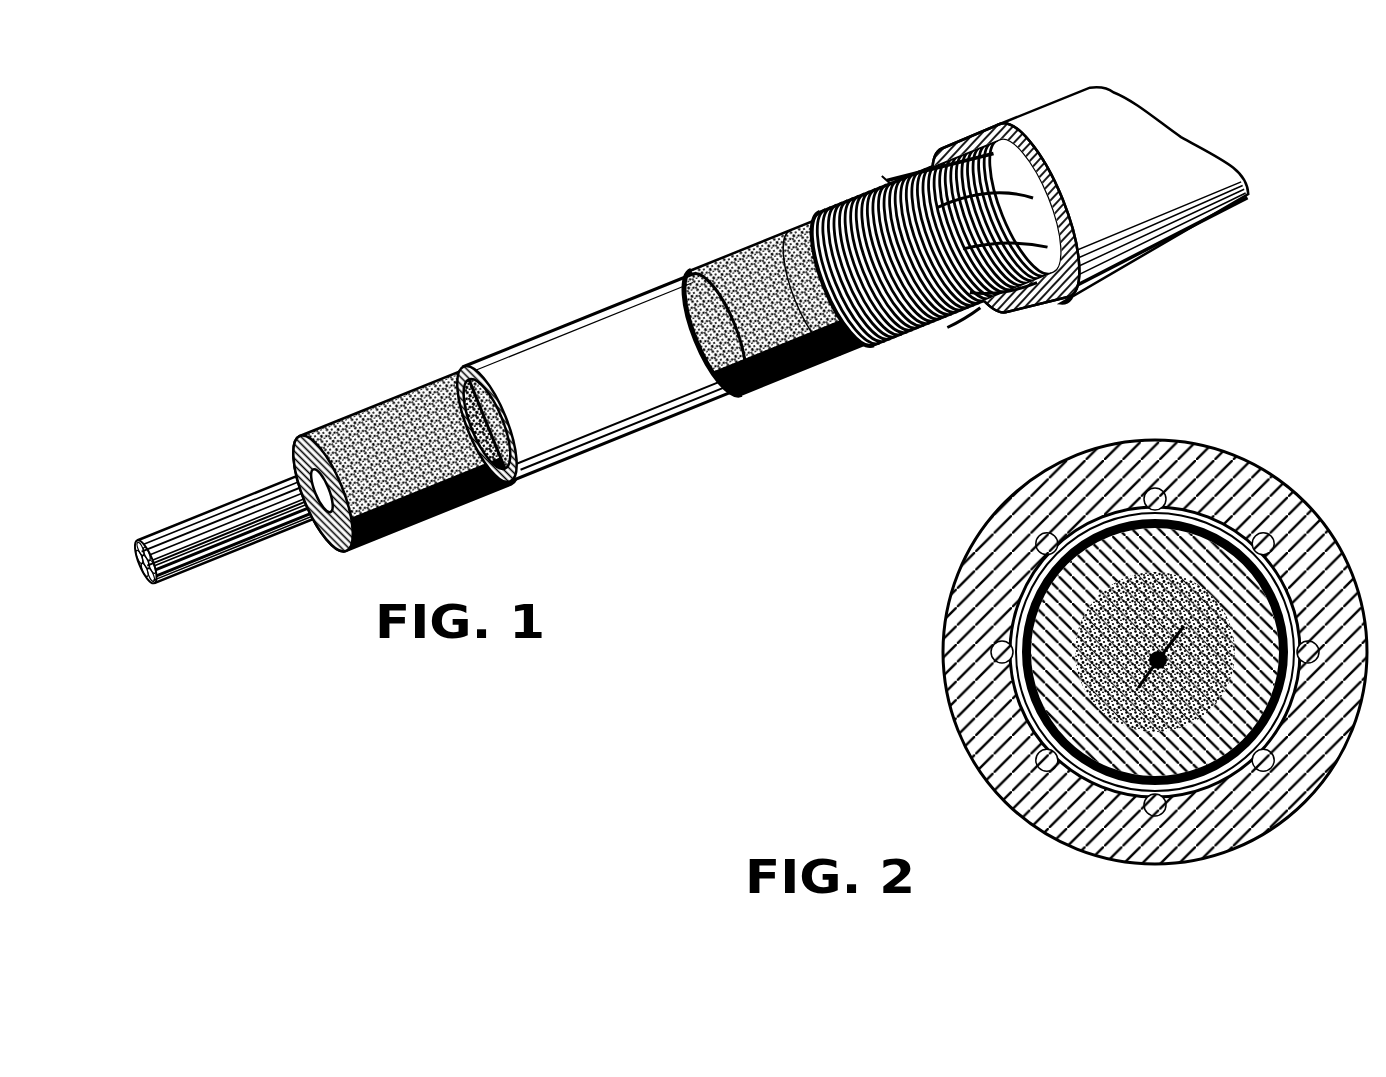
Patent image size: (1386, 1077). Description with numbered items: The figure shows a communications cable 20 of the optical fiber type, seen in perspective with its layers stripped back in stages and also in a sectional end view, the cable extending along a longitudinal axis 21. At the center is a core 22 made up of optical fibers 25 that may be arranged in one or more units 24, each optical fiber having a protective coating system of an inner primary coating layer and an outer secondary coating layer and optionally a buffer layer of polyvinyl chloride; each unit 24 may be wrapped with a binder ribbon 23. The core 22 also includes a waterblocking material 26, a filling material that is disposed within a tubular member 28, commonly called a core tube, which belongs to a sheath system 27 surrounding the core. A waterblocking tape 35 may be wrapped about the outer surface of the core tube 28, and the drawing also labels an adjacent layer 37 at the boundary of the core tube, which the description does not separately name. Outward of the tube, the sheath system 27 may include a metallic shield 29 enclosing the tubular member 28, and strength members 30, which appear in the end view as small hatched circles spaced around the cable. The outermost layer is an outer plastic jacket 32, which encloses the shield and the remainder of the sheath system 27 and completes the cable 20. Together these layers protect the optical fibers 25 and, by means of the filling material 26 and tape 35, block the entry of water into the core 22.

In FIG. 1, the communications cable 20 is at (508, 250).
In FIG. 2, the communications cable 20 is at (956, 531).
In FIG. 1, the longitudinal axis 21 is at (1213, 134).
In FIG. 1, the core 22 is at (189, 519).
In FIG. 2, the core 22 is at (1086, 686).
In FIG. 1, the binder ribbon 23 is at (254, 551).
In FIG. 1, the unit 24 is at (200, 566).
In FIG. 1, the optical fiber 25 is at (152, 586).
In FIG. 1, the waterblocking material 26 is at (352, 414).
In FIG. 2, the waterblocking material 26 is at (1155, 652).
In FIG. 1, the sheath system 27 is at (848, 362).
In FIG. 1, the tubular member 28 is at (580, 456).
In FIG. 1, the metallic shield 29 is at (874, 358).
In FIG. 2, the metallic shield 29 is at (1110, 527).
In FIG. 1, the strength member 30 is at (910, 178).
In FIG. 2, the strength member 30 is at (1158, 493).
In FIG. 1, the outer plastic jacket 32 is at (948, 138).
In FIG. 2, the outer plastic jacket 32 is at (1263, 478).
In FIG. 1, the waterblocking tape 35 is at (678, 268).
In FIG. 2, the waterblocking tape 35 is at (1026, 622).
In FIG. 1, the semiconducting layer 37 is at (693, 319).